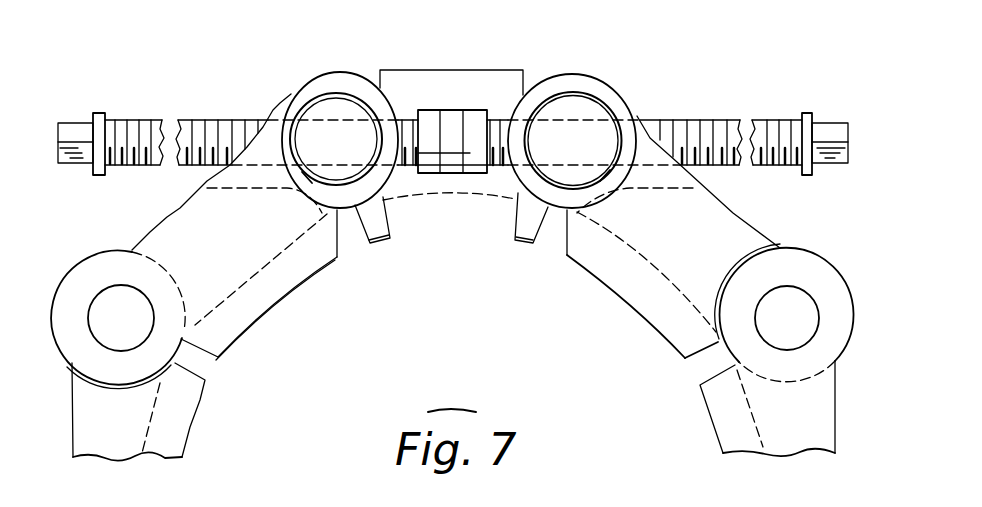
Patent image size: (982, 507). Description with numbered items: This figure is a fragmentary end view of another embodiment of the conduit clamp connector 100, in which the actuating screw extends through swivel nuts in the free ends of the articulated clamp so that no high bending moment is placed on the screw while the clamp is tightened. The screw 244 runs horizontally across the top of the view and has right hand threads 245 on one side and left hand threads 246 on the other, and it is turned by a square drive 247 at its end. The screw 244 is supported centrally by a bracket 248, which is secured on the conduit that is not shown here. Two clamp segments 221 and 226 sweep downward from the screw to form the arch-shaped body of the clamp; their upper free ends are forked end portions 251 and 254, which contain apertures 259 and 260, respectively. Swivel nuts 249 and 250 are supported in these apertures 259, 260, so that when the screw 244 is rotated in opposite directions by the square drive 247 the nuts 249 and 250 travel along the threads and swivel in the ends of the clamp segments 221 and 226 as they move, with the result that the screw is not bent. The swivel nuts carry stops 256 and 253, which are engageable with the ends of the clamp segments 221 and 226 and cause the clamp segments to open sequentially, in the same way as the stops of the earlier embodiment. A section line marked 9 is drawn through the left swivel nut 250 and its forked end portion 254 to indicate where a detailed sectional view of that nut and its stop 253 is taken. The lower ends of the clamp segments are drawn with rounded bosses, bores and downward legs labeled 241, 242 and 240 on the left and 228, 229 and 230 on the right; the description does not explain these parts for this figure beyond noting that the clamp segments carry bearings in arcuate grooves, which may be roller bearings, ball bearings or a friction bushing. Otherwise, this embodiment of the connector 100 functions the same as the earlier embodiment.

The section line for FIG. 9 is at (263, 23).
The connector 100 is at (100, 192).
The clamp segment 221 is at (728, 224).
The clamp segment 226 is at (180, 208).
The right boss 228 is at (822, 282).
The right boss bore 229 is at (786, 298).
The right boss flange 230 is at (822, 272).
The left leg stem 240 is at (93, 387).
The left boss 241 is at (85, 263).
The left boss bore 242 is at (100, 298).
The screw 244 is at (93, 112).
The right hand threads 245 is at (712, 119).
The left hand threads 246 is at (138, 119).
The square drive 247 is at (822, 112).
The bracket 248 is at (455, 110).
The swivel nut 249 is at (582, 108).
The swivel nut 250 is at (332, 99).
The forked end portion 251 is at (553, 85).
The stop 253 is at (380, 245).
The forked end portion 254 is at (296, 94).
The stop 256 is at (520, 245).
The aperture 259 is at (606, 108).
The aperture 260 is at (294, 112).